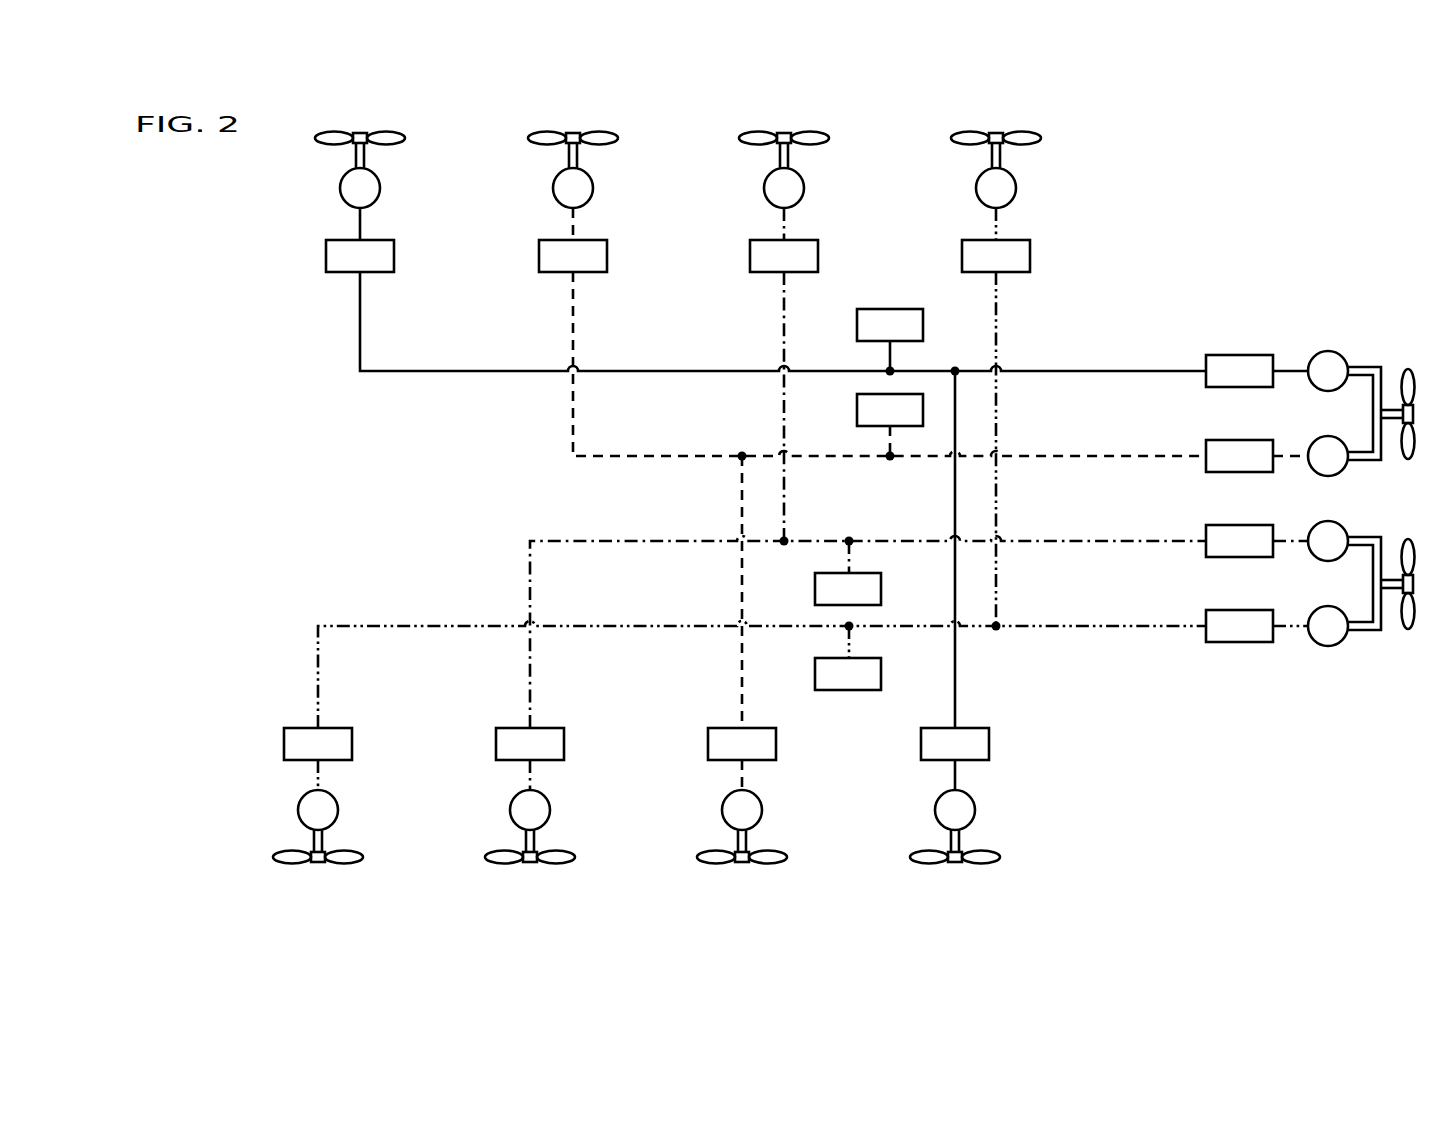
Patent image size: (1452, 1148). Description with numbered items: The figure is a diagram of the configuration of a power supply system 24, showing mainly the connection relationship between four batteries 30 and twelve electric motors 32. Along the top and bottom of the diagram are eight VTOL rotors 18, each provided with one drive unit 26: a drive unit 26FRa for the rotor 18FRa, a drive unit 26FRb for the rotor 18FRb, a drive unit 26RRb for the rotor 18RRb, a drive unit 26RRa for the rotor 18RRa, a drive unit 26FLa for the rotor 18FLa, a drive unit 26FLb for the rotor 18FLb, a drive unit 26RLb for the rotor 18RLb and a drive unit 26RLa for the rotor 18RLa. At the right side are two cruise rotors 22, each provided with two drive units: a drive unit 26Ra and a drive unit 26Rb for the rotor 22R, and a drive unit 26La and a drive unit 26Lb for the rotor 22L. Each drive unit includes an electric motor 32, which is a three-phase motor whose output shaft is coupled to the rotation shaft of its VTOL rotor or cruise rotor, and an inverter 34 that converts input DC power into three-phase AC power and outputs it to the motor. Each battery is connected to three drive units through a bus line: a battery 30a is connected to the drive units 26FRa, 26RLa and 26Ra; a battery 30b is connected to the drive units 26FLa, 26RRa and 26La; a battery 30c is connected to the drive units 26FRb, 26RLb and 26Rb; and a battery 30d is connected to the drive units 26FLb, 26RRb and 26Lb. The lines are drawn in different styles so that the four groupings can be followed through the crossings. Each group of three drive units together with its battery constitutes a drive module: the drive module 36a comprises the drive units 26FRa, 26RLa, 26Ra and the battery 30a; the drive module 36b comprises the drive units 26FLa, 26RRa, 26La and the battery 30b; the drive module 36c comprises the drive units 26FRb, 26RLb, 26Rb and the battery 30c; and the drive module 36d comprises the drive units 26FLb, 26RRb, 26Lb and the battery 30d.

The power supply system 24 is at (1264, 191).
The VTOL rotor 18 is at (397, 120).
The rotor 18FRa is at (365, 132).
The rotor 18FRb is at (578, 132).
The rotor 18RRb is at (789, 132).
The rotor 18RRa is at (1001, 132).
The rotor 18FLa is at (321, 862).
The rotor 18FLb is at (533, 862).
The rotor 18RLb is at (745, 862).
The rotor 18RLa is at (958, 862).
The drive unit 26 is at (329, 207).
The drive unit 26FRa is at (329, 207).
The drive unit 26FRb is at (594, 186).
The drive unit 26RRb is at (805, 186).
The drive unit 26RRa is at (1017, 186).
The drive unit 26FLa is at (352, 744).
The drive unit 26FLb is at (564, 744).
The drive unit 26RLb is at (776, 744).
The drive unit 26RLa is at (989, 744).
The drive unit 26Ra is at (1222, 355).
The drive unit 26Rb is at (1222, 440).
The drive unit 26Lb is at (1222, 525).
The drive unit 26La is at (1222, 610).
The electric motor 32 is at (381, 186).
The inverter 34 is at (394, 256).
The battery 30 is at (901, 307).
The battery 30a is at (889, 308).
The battery 30b is at (845, 691).
The battery 30c is at (856, 410).
The battery 30d is at (882, 591).
The drive module 36a is at (338, 374).
The drive module 36b is at (300, 624).
The drive module 36c is at (562, 471).
The drive module 36d is at (513, 534).
The cruise rotor 22 is at (1391, 373).
The rotor 22R is at (1408, 368).
The rotor 22L is at (1408, 630).